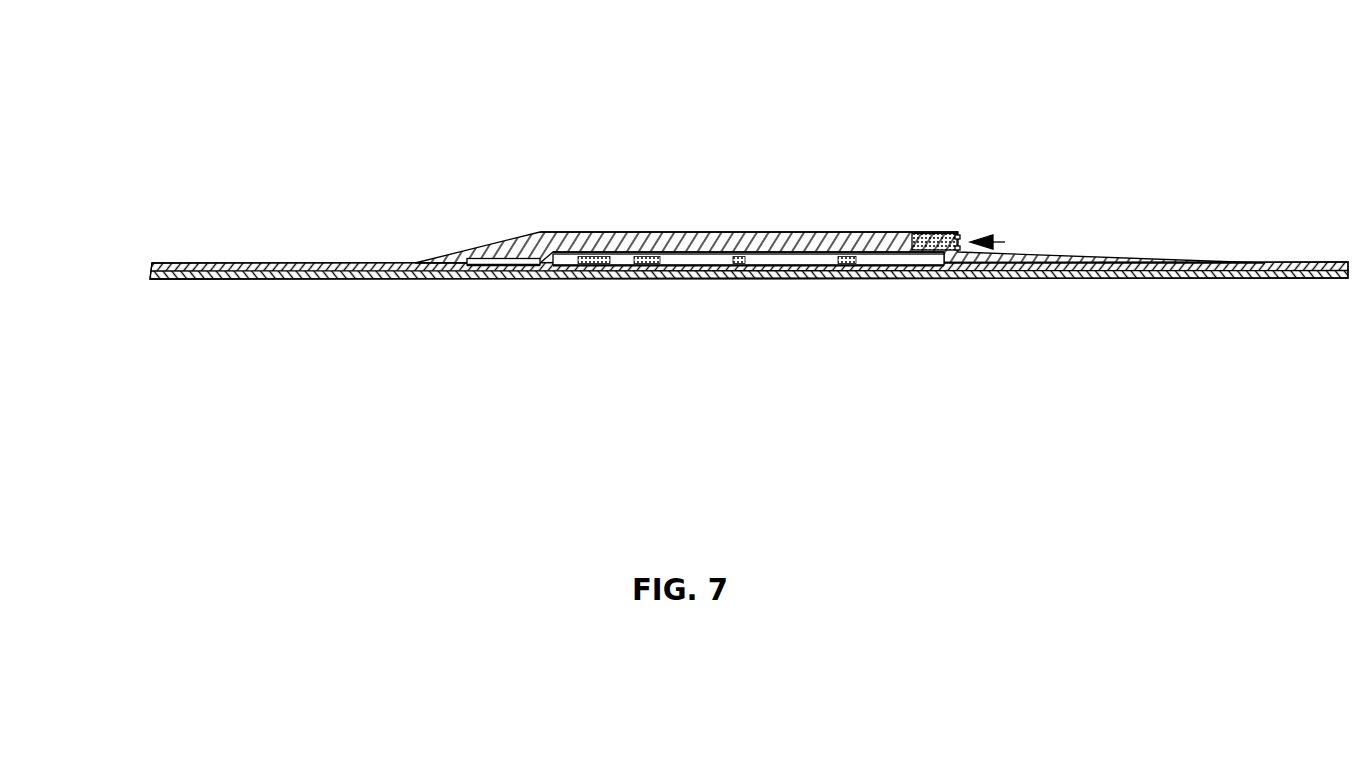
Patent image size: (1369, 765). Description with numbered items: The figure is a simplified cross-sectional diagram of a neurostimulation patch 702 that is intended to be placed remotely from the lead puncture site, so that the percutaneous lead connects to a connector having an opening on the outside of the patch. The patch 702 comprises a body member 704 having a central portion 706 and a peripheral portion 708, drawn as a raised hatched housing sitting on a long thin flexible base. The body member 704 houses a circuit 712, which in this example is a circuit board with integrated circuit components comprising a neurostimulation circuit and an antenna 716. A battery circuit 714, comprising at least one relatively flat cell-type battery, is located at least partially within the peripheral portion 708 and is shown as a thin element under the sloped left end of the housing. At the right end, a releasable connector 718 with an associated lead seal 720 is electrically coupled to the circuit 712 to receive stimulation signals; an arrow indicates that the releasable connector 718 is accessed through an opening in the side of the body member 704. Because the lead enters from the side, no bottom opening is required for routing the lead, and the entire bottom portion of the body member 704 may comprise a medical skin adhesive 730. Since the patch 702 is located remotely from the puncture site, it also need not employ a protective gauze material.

The patch 702 is at (516, 80).
The body member 704 is at (700, 260).
The central portion 706 is at (749, 211).
The peripheral portion 708 is at (748, 232).
The circuit 712 is at (748, 302).
The battery circuit 714 is at (478, 221).
The antenna 716 is at (748, 290).
The releasable connector 718 is at (992, 242).
The lead seal 720 is at (958, 237).
The medical skin adhesive 730 is at (749, 306).